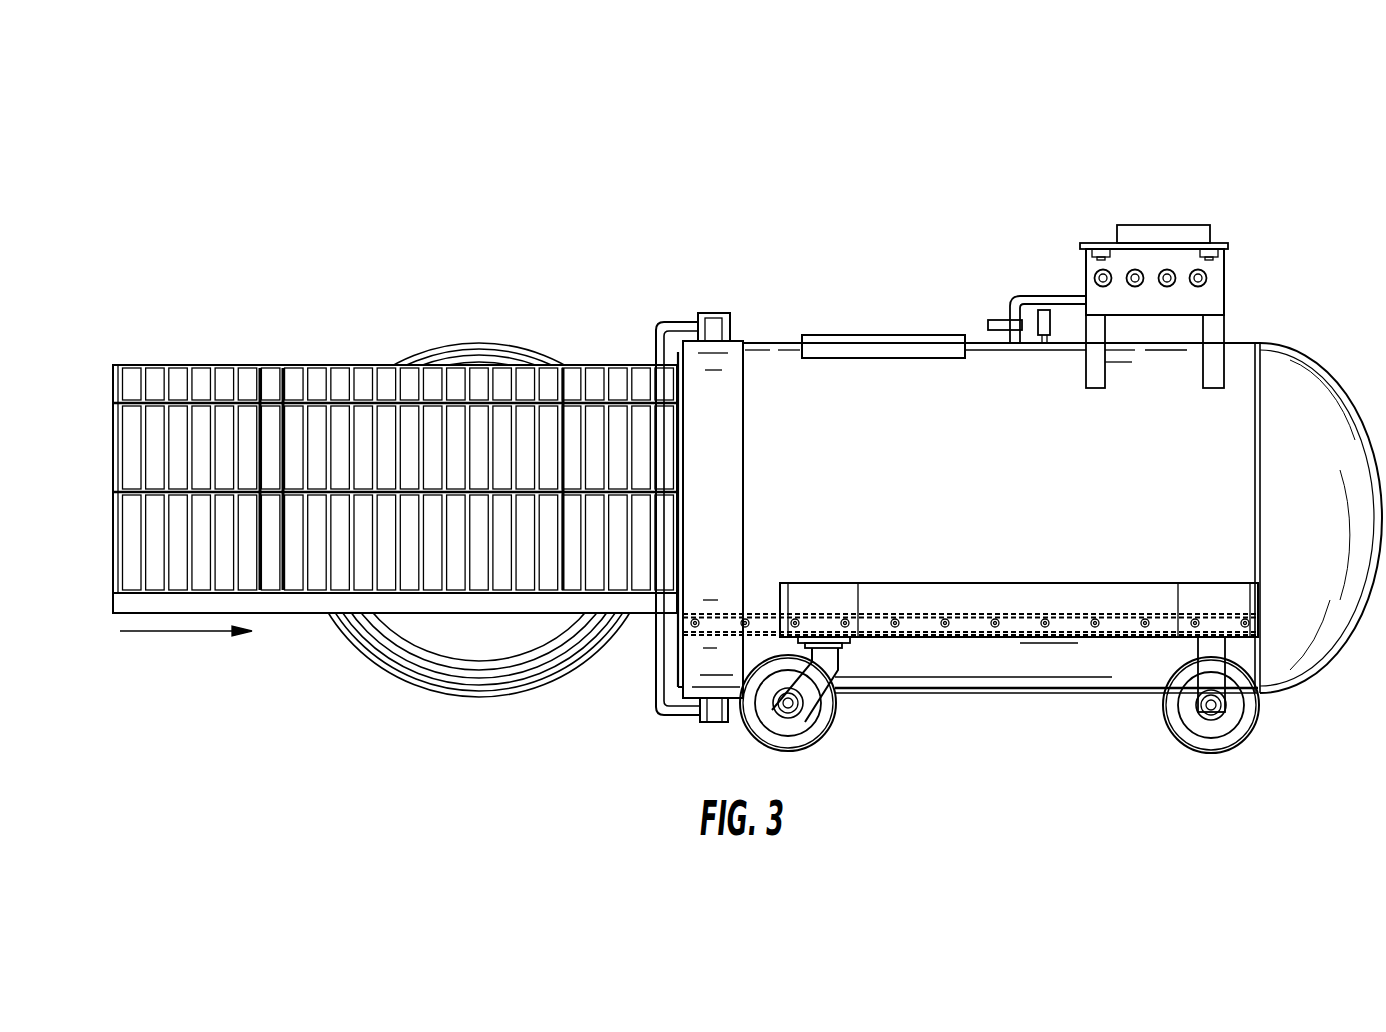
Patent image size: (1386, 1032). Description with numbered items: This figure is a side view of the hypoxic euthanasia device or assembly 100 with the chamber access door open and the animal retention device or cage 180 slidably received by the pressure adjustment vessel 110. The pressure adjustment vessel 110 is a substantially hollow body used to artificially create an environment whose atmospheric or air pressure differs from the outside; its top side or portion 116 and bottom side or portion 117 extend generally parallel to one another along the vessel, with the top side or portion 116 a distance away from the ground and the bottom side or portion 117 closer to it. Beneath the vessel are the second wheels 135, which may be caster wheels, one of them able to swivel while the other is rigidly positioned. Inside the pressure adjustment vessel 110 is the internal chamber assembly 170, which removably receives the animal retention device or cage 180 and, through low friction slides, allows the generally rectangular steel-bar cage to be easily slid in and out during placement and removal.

The hypoxic euthanasia device or assembly 100 is at (986, 188).
The pressure adjustment vessel 110 is at (1243, 366).
The top side or portion 116 is at (781, 343).
The bottom side or portion 117 is at (977, 695).
The second wheels 135 is at (820, 740).
The internal chamber assembly 170 is at (690, 623).
The animal retention device or cage 180 is at (174, 363).